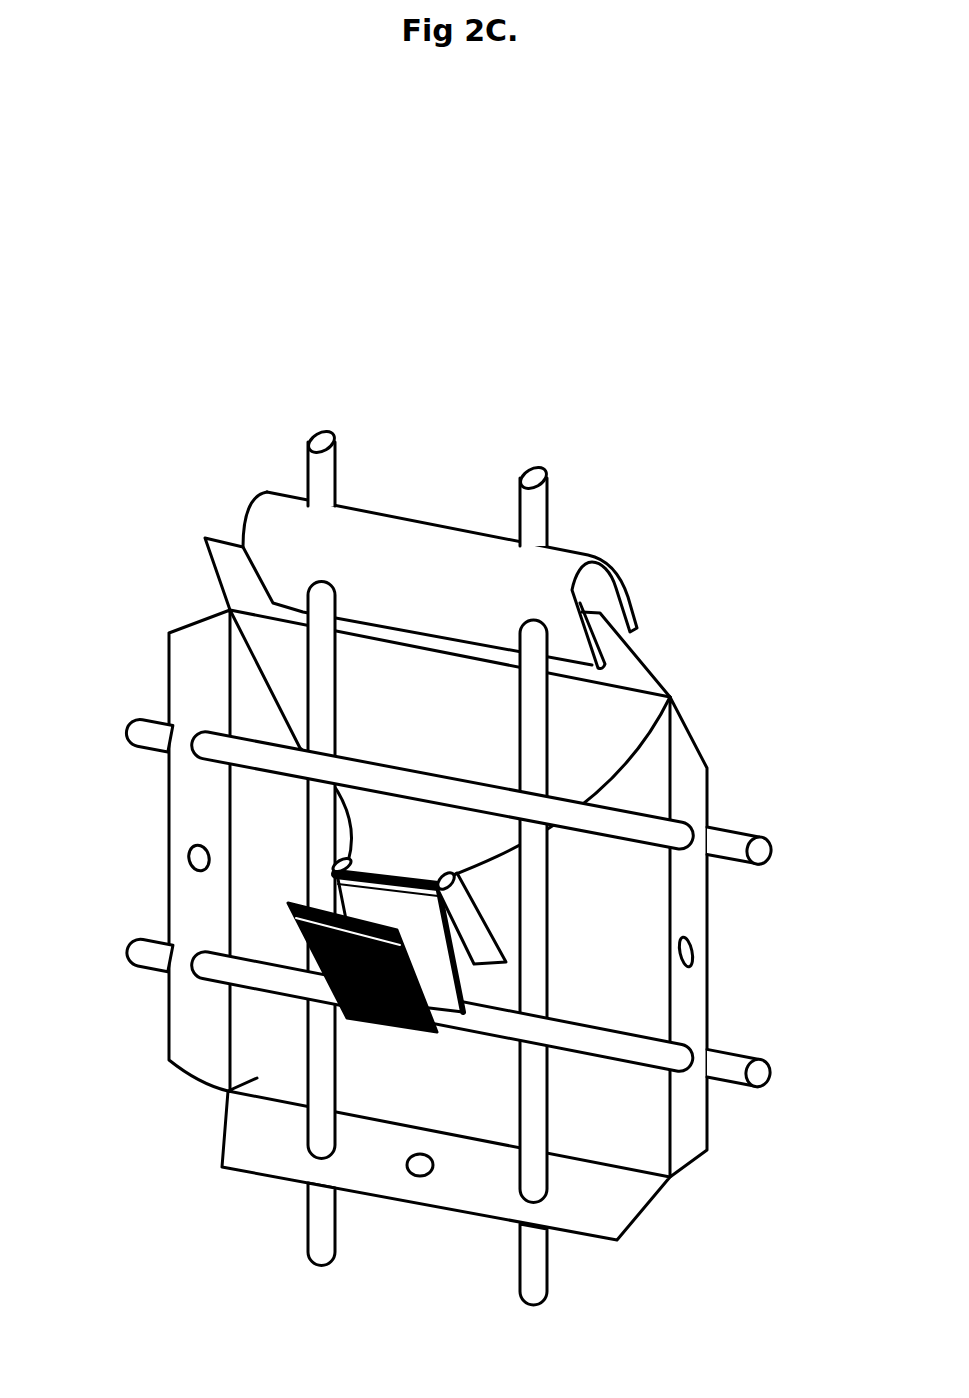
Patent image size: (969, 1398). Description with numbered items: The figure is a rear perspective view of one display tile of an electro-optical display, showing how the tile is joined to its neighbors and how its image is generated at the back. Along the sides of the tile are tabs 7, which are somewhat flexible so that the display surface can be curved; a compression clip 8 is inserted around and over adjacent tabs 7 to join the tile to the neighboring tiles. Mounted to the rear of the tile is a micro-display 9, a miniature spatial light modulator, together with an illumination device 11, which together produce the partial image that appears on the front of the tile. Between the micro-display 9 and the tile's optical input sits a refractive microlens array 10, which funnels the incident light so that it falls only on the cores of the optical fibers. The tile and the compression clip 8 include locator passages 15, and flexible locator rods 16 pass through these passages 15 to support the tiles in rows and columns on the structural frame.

The tab 7 is at (261, 1162).
The compression clip 8 is at (645, 613).
The micro-display 9 is at (420, 1027).
The refractive microlens array 10 is at (478, 987).
The illumination device 11 is at (369, 1037).
The locator passage 15 is at (711, 955).
The locator rod 16 is at (120, 953).